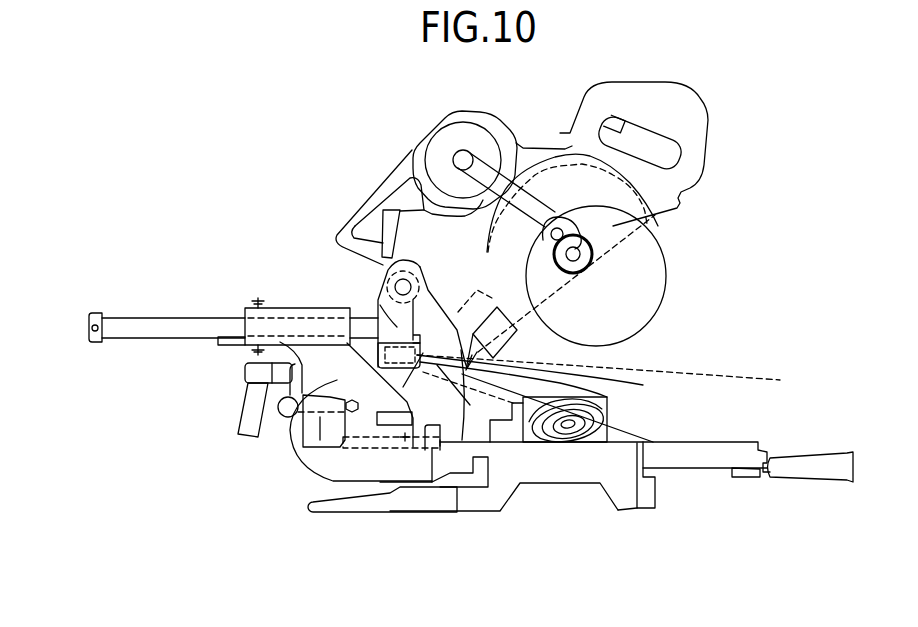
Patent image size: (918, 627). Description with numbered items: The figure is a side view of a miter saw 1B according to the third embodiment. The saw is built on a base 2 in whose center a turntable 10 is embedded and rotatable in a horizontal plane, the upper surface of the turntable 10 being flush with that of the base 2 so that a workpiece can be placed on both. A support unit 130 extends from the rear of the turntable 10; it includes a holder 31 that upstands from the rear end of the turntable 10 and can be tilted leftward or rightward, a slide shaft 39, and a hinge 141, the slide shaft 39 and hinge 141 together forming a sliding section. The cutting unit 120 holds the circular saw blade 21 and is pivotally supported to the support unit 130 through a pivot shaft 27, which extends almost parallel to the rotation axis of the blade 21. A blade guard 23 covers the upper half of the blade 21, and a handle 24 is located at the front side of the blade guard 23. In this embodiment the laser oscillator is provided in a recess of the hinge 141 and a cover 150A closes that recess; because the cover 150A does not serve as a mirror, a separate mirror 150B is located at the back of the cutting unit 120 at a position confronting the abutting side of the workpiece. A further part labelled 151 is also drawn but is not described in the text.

The miter saw 1B is at (775, 148).
The base 2 is at (567, 470).
The turntable 10 is at (688, 462).
The circular saw blade 21 is at (649, 268).
The blade guard 23 is at (660, 226).
The handle 24 is at (662, 112).
The pivot shaft 27 is at (395, 285).
The holder 31 is at (340, 380).
The slide shaft 39 is at (155, 327).
The cutting unit 120 is at (419, 128).
The support unit 130 is at (208, 435).
The hinge 141 is at (380, 298).
The cover 150A is at (462, 440).
The mirror 150B is at (643, 385).
The link member 151 is at (397, 360).